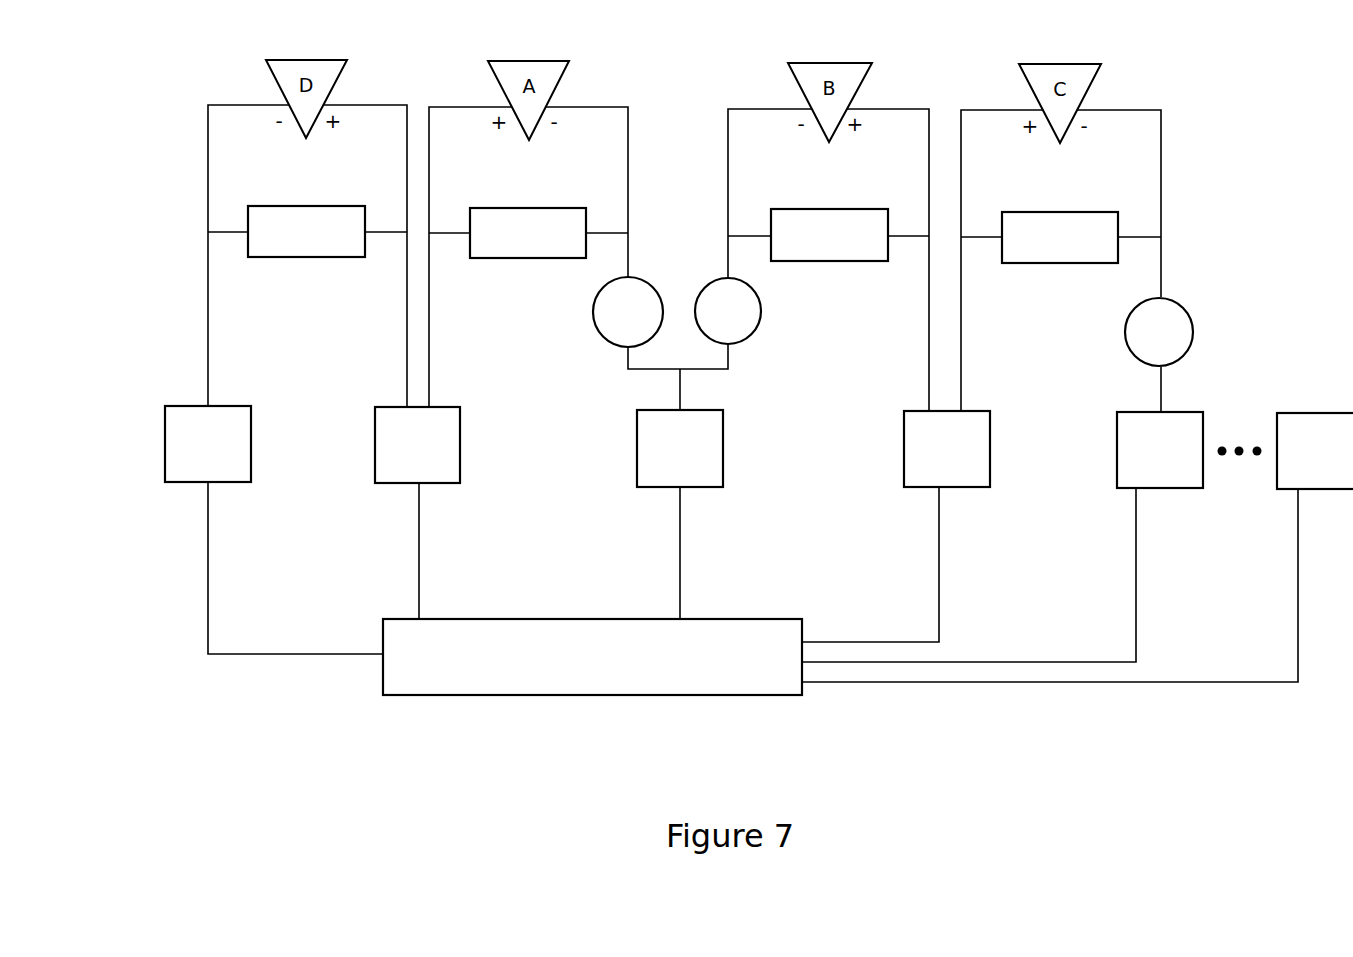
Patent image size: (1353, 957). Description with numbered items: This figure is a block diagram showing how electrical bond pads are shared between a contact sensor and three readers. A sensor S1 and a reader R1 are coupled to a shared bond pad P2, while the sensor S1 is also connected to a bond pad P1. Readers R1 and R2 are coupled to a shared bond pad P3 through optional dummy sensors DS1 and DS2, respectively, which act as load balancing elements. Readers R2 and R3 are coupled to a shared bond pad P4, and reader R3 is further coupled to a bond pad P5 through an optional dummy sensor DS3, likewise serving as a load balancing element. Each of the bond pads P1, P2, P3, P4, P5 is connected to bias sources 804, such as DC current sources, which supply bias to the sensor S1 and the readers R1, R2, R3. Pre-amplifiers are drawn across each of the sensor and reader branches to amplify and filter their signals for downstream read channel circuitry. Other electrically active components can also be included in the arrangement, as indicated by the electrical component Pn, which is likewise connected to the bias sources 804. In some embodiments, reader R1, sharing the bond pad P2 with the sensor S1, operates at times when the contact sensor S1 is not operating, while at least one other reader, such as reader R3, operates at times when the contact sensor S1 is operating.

The bias sources 804 is at (578, 619).
The sensor S1 is at (306, 231).
The reader R1 is at (528, 233).
The reader R2 is at (829, 235).
The reader R3 is at (1060, 237).
The dummy sensor DS1 is at (628, 312).
The dummy sensor DS2 is at (728, 311).
The dummy sensor DS3 is at (1159, 332).
The electrical bond pad P1 is at (208, 444).
The shared bond pad P2 is at (417, 445).
The shared bond pad P3 is at (680, 448).
The shared bond pad P4 is at (947, 449).
The bond pad P5 is at (1160, 450).
The electrical component Pn is at (1315, 451).